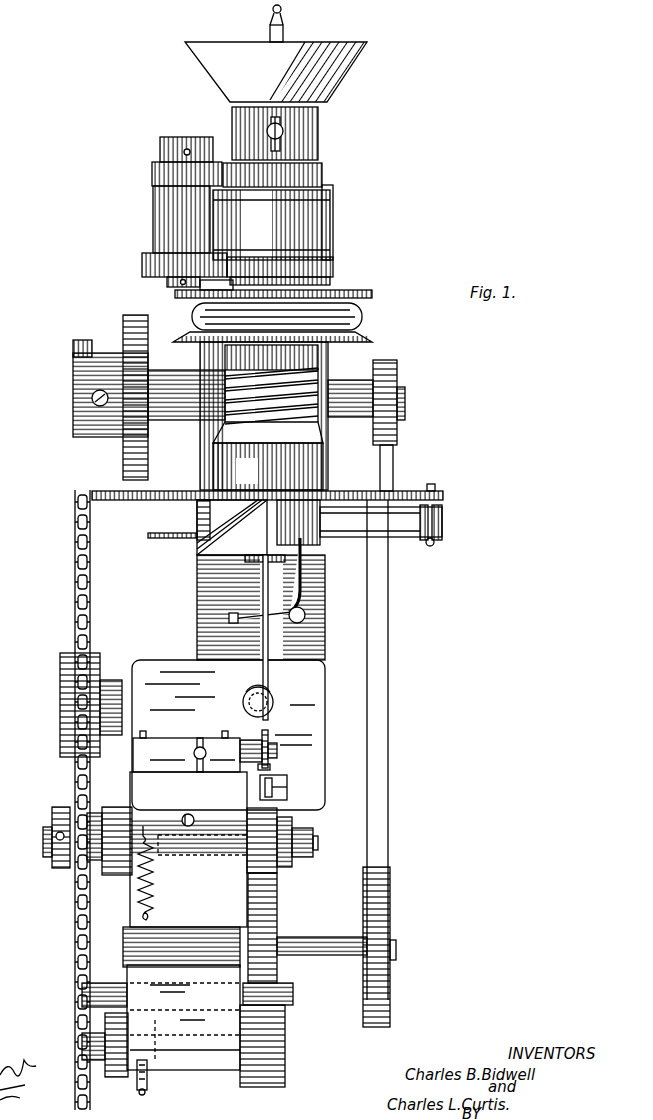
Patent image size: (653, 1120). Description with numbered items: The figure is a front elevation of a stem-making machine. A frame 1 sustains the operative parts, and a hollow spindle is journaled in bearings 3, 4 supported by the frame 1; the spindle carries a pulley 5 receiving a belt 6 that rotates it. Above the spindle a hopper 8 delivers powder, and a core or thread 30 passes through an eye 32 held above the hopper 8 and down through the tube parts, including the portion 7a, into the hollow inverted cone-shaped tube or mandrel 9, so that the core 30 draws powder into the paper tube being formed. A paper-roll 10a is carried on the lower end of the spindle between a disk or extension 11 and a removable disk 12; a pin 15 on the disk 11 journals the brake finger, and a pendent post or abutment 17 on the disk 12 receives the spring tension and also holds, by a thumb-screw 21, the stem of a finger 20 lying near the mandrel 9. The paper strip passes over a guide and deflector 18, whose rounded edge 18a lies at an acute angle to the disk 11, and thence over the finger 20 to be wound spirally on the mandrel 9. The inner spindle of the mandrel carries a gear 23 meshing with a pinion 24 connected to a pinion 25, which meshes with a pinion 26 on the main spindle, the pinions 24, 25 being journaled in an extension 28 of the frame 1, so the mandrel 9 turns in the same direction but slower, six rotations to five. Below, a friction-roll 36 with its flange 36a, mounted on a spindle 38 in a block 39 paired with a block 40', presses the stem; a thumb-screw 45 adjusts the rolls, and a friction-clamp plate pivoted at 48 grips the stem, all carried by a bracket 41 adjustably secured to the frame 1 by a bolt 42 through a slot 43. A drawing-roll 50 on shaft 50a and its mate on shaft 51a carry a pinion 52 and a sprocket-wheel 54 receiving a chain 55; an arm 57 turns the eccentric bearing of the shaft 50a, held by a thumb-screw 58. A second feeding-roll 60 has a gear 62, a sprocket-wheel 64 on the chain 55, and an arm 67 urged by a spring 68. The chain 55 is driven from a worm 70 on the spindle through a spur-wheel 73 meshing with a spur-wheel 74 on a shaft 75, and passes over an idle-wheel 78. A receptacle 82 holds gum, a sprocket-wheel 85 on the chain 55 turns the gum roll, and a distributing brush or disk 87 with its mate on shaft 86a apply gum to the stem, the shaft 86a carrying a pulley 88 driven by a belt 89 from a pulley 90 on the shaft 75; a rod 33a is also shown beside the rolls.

The frame 1 is at (197, 609).
The bearing 3 is at (264, 416).
The bearing 4 is at (273, 222).
The pulley 5 is at (364, 291).
The belt 6 is at (190, 333).
The cylinder 7a is at (320, 133).
The hopper 8 is at (276, 72).
The tube or mandrel 9 is at (228, 735).
The paper-roll 10a is at (321, 517).
The disk or extension 11 is at (403, 491).
The removable disk 12 is at (163, 548).
The pin 15 is at (436, 488).
The pendent post or abutment 17 is at (310, 586).
The guide and deflector 18 is at (183, 565).
The rounded edge 18a is at (197, 521).
The finger 20 is at (232, 623).
The thumb-screw 21 is at (306, 621).
The pinion or gear 23 is at (324, 173).
The pinion 24 is at (150, 176).
The pinion 25 is at (142, 276).
The pinion 26 is at (334, 271).
The extension 28 is at (153, 232).
The core or thread 30 is at (282, 6).
The eye 32 is at (272, 13).
The rod 33a is at (262, 737).
The friction-roll 36 is at (270, 733).
The flange 36a is at (270, 767).
The spindle 38 is at (278, 751).
The block 39 is at (160, 910).
The block 40' is at (186, 751).
The bracket 41 is at (158, 877).
The disk 42 is at (243, 702).
The slot 43 is at (244, 684).
The thumb-screw 45 is at (201, 773).
The pivot 48 is at (287, 788).
The friction drawing-roll 50 is at (293, 830).
The shaft 50a is at (318, 844).
The shaft 51a is at (43, 849).
The pinion 52 is at (112, 807).
The sprocket-wheel 54 is at (54, 810).
The chain 55 is at (52, 972).
The arm 57 is at (143, 826).
The thumb-screw 58 is at (186, 814).
The feeding-roll 60 is at (287, 1042).
The gear 62 is at (115, 1058).
The sprocket-wheel 64 is at (82, 1049).
The arm 67 is at (148, 1081).
The spring 68 is at (145, 1095).
The worm 70 is at (232, 380).
The spur-wheel 73 is at (123, 323).
The spur-wheel 74 is at (381, 525).
The shaft 75 is at (406, 404).
The idle-wheel 78 is at (60, 736).
The receptacle 82 is at (287, 1026).
The sprocket-wheel 85 is at (82, 996).
The shaft 86a is at (322, 934).
The distributing brush or disk 87 is at (262, 928).
The pulley 88 is at (391, 921).
The belt 89 is at (389, 793).
The pulley 90 is at (398, 369).